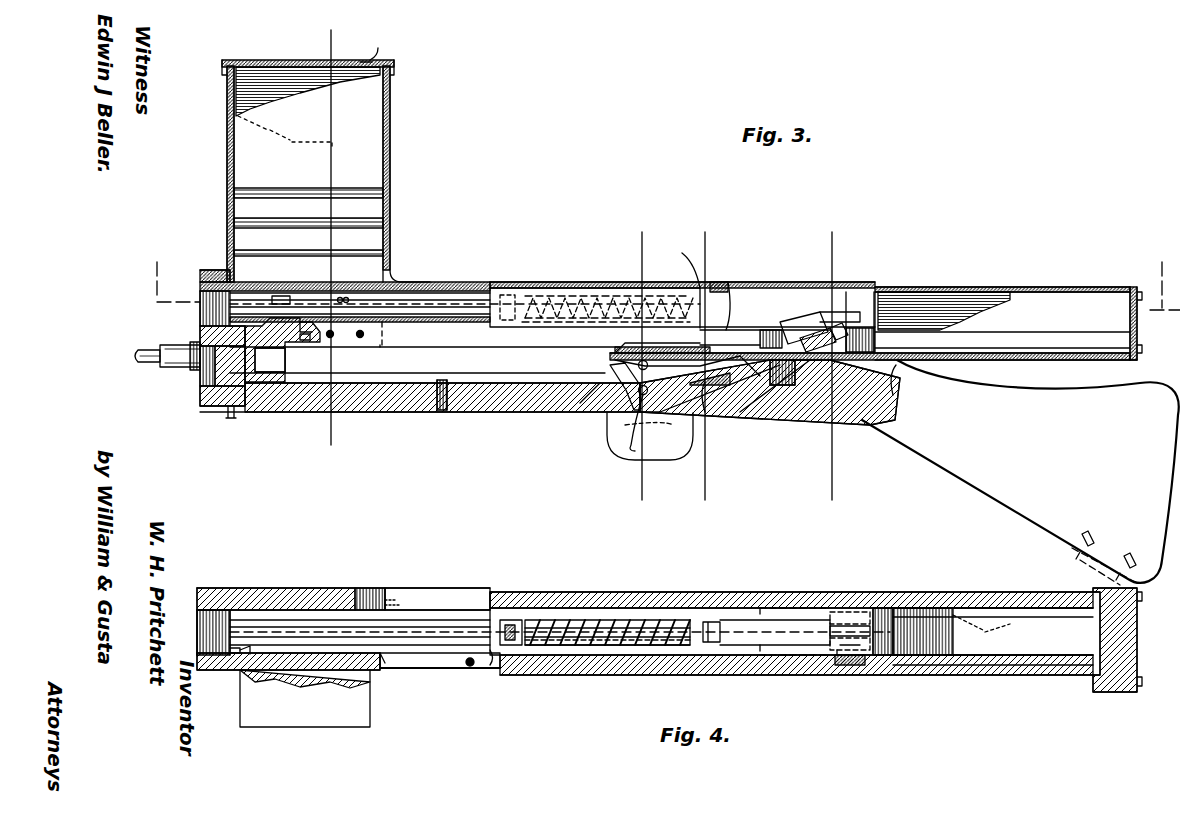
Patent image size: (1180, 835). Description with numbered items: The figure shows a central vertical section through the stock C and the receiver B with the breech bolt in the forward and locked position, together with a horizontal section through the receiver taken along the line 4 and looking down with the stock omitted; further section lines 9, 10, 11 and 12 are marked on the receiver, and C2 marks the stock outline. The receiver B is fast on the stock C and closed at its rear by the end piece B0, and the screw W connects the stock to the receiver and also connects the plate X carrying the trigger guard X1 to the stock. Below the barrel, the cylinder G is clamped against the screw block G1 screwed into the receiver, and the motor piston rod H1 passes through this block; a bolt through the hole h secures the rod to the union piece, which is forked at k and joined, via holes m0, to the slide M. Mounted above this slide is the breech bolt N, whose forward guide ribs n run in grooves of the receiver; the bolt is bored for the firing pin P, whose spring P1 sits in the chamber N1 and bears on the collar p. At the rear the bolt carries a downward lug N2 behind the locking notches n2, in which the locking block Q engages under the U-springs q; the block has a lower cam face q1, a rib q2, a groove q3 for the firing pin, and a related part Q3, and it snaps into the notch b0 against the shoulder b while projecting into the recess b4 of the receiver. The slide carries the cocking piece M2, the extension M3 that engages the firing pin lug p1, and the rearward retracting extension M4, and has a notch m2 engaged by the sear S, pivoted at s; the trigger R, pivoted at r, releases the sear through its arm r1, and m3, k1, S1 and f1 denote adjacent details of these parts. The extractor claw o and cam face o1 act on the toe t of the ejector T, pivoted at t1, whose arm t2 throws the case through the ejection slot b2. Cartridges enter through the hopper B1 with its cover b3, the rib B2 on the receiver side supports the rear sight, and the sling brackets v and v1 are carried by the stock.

In FIG. 3, the section line 9- 9 is at (282, 35).
In FIG. 3, the section line 4— 4 is at (652, 294).
In FIG. 3, the section line 10- 10 is at (596, 238).
In FIG. 3, the section line 11- 11 is at (700, 508).
In FIG. 3, the section line 12- 12 is at (750, 240).
In FIG. 3, the receiver B is at (497, 282).
In FIG. 4, the receiver B is at (955, 592).
In FIG. 3, the casing end cap B0 is at (1132, 287).
In FIG. 4, the casing end cap B0 is at (1130, 692).
In FIG. 3, the hopper B1 is at (370, 141).
In FIG. 4, the rib B2 is at (318, 727).
In FIG. 3, the shoulder b is at (900, 380).
In FIG. 3, the notch b0 is at (790, 412).
In FIG. 4, the notch b0 is at (210, 655).
In FIG. 4, the ejection slot b2 is at (432, 600).
In FIG. 3, the cover b3 is at (372, 53).
In FIG. 3, the recess b4 is at (1005, 330).
In FIG. 4, the recess b4 is at (988, 612).
In FIG. 3, the stock C is at (500, 412).
In FIG. 3, the stock C2 is at (1020, 471).
In FIG. 3, the cylinder G is at (175, 368).
In FIG. 3, the screw block G1 is at (196, 385).
In FIG. 3, the motor piston rod H1 is at (146, 360).
In FIG. 3, the hole h is at (268, 363).
In FIG. 3, the fork k is at (285, 365).
In FIG. 3, the latch arm k1 is at (305, 322).
In FIG. 3, the slide M is at (465, 347).
In FIG. 3, the cocking piece M2 is at (690, 262).
In FIG. 4, the cocking piece M2 is at (712, 622).
In FIG. 4, the extension M3 is at (770, 620).
In FIG. 3, the rearward retracting extension M4 is at (745, 286).
In FIG. 3, the holes m0 is at (360, 338).
In FIG. 3, the notch m2 is at (310, 340).
In FIG. 3, the slide notch m3 is at (840, 324).
In FIG. 3, the breech bolt N is at (345, 295).
In FIG. 4, the breech bolt N is at (330, 630).
In FIG. 4, the chamber N1 is at (590, 645).
In FIG. 3, the lug N2 is at (870, 330).
In FIG. 4, the lug N2 is at (880, 655).
In FIG. 3, the guide ribs n is at (410, 300).
In FIG. 4, the guide ribs n is at (262, 605).
In FIG. 3, the locking notches n2 is at (770, 328).
In FIG. 4, the claw o is at (235, 655).
In FIG. 4, the cam face o1 is at (245, 660).
In FIG. 3, the firing pin P is at (545, 292).
In FIG. 4, the firing pin P is at (560, 620).
In FIG. 3, the spring P1 is at (562, 292).
In FIG. 4, the spring P1 is at (590, 620).
In FIG. 3, the collar p is at (513, 292).
In FIG. 4, the collar p is at (512, 620).
In FIG. 4, the lug p1 is at (845, 612).
In FIG. 3, the locking block Q is at (282, 296).
In FIG. 4, the locking block Q is at (845, 626).
In FIG. 3, the catch plate Q3 is at (800, 318).
In FIG. 3, the U-springs q is at (820, 332).
In FIG. 4, the U-springs q is at (848, 665).
In FIG. 3, the cam face q1 is at (855, 318).
In FIG. 4, the cam face q1 is at (855, 624).
In FIG. 4, the rib q2 is at (840, 660).
In FIG. 4, the groove q3 is at (842, 652).
In FIG. 3, the trigger R is at (625, 457).
In FIG. 3, the pivot r is at (635, 412).
In FIG. 3, the arm r1 is at (708, 412).
In FIG. 3, the sear S is at (632, 367).
In FIG. 3, the sear plate S1 is at (620, 347).
In FIG. 3, the pivot s is at (742, 412).
In FIG. 3, the frame lug f1 is at (755, 412).
In FIG. 4, the ejector T is at (435, 668).
In FIG. 4, the toe t is at (495, 668).
In FIG. 4, the pivot t1 is at (470, 666).
In FIG. 4, the arm t2 is at (392, 668).
In FIG. 3, the bracket v is at (229, 418).
In FIG. 3, the bracket v1 is at (1082, 562).
In FIG. 4, the bracket v1 is at (1084, 570).
In FIG. 3, the screw W is at (877, 412).
In FIG. 3, the plate X is at (548, 412).
In FIG. 3, the trigger guard X1 is at (605, 440).